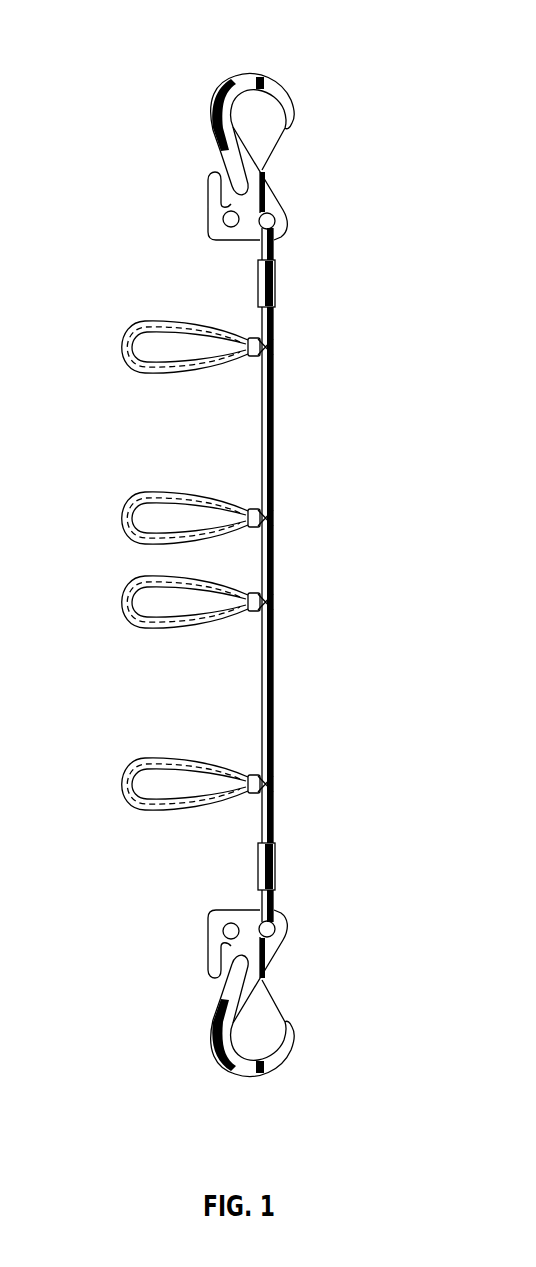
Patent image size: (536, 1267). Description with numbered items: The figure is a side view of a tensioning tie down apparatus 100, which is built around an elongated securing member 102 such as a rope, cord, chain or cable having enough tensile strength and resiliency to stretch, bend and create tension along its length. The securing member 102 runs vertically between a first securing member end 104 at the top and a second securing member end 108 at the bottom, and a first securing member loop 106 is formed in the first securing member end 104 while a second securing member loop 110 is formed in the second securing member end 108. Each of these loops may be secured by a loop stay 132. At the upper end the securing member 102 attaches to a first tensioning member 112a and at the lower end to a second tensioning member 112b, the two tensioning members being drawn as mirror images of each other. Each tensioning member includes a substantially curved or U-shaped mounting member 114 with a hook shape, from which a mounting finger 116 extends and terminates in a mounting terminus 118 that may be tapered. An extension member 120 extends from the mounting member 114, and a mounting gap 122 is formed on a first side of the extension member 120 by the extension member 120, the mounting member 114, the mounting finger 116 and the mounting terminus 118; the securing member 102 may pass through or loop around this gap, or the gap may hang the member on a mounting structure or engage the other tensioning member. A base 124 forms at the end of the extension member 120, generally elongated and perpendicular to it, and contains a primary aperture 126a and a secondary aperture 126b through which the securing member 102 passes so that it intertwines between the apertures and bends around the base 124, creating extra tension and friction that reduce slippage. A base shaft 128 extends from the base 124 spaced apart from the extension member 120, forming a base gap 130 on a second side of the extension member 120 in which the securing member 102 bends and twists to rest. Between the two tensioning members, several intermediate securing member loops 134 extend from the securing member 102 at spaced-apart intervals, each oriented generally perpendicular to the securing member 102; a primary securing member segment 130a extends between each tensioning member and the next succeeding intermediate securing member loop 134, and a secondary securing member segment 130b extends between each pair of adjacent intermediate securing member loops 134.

The tensioning tie down apparatus 100 is at (143, 63).
The securing member 102 is at (279, 575).
The first securing member end 104 is at (273, 282).
The first securing member loop 106 is at (273, 247).
The second securing member end 108 is at (273, 873).
The second securing member loop 110 is at (272, 913).
The first tensioning member 112a is at (282, 188).
The second tensioning member 112b is at (298, 933).
The mounting member 114 is at (253, 77).
The mounting finger 116 is at (273, 78).
The mounting terminus 118 is at (293, 117).
The extension member 120 is at (217, 132).
The mounting gap 122 is at (263, 122).
The base 124 is at (247, 243).
The primary aperture 126a is at (222, 220).
The secondary aperture 126b is at (276, 219).
The base shaft 128 is at (208, 192).
The base gap 130 is at (228, 173).
The primary securing member segment 130a is at (275, 312).
The secondary securing member segment 130b is at (273, 460).
The loop stay 132 is at (268, 347).
The intermediate securing member loop 134 is at (143, 366).